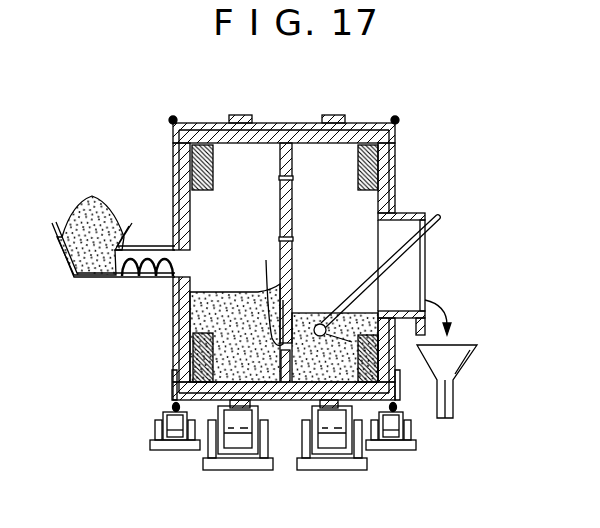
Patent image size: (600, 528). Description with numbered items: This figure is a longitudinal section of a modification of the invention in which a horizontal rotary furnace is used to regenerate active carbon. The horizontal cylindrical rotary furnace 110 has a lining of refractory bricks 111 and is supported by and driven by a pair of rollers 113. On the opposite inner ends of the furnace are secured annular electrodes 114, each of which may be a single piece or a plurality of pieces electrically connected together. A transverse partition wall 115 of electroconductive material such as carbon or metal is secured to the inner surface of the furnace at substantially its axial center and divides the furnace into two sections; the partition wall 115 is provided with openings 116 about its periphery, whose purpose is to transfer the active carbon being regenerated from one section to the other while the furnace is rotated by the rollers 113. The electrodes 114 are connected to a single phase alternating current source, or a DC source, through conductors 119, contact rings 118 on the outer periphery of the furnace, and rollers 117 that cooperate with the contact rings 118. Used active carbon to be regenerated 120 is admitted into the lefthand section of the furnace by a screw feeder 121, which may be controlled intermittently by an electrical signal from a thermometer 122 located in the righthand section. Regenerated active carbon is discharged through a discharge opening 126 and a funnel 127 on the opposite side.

The horizontal cylindrical rotary furnace 110 is at (282, 122).
The lining of refractory bricks 111 is at (400, 182).
The rollers 113 is at (240, 452).
The annular electrodes 114 is at (205, 168).
The transverse partition wall 115 is at (293, 191).
The openings 116 is at (284, 178).
The rollers 117 is at (175, 440).
The contact rings 118 is at (172, 406).
The conductors 119 is at (172, 376).
The used active carbon to be regenerated 120 is at (84, 210).
The screw feeder 121 is at (139, 280).
The thermometer 122 is at (445, 225).
The discharge opening 126 is at (410, 268).
The funnel 127 is at (476, 355).